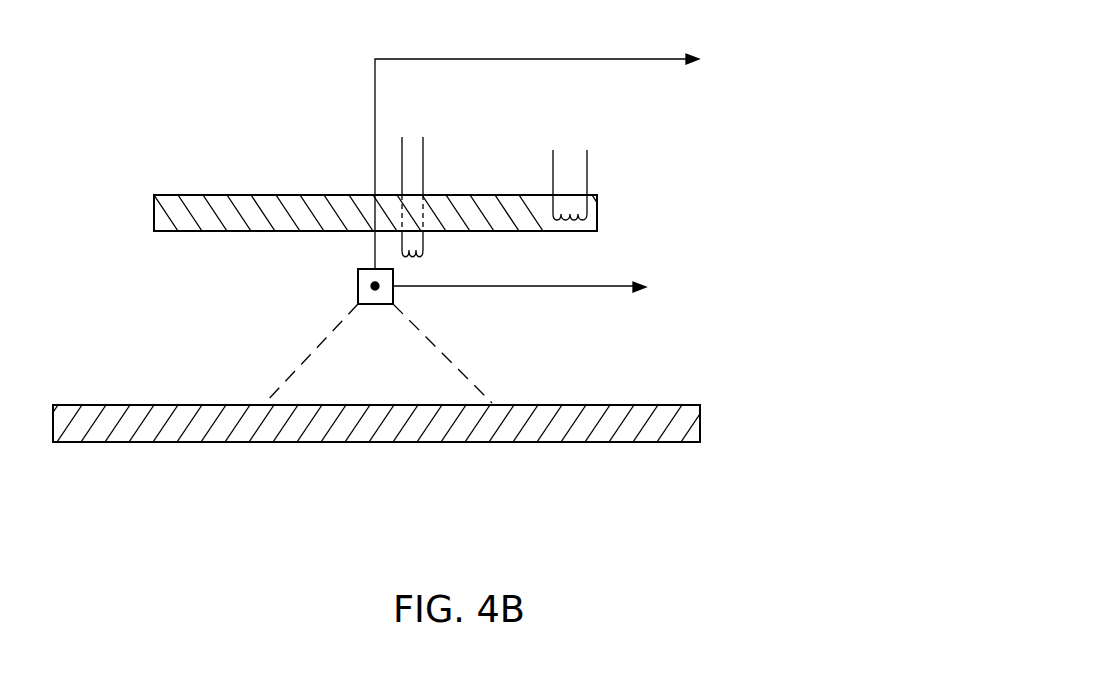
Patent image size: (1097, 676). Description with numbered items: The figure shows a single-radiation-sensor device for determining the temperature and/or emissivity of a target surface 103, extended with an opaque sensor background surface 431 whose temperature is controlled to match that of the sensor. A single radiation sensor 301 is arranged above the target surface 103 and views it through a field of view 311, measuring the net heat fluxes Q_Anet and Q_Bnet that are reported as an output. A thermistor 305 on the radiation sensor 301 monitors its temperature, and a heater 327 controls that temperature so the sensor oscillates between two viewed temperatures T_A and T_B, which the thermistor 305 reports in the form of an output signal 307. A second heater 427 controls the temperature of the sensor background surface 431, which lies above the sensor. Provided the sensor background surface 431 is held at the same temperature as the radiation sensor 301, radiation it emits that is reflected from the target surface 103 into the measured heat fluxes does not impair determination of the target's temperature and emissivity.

The target surface 103 is at (565, 400).
The radiation sensor 301 is at (358, 290).
The thermistor 305 is at (371, 284).
The output signal 307 is at (520, 59).
The field of view 311 is at (312, 352).
The heater 327 is at (424, 162).
The heater 427 is at (588, 162).
The sensor background surface 431 is at (562, 231).